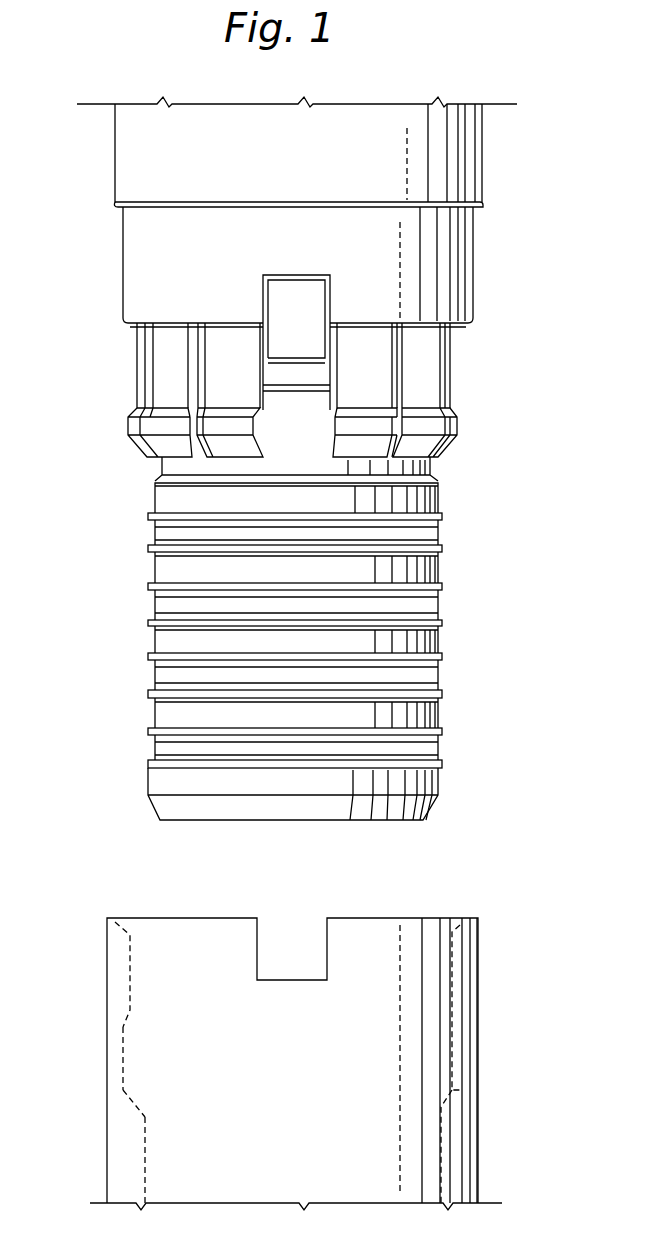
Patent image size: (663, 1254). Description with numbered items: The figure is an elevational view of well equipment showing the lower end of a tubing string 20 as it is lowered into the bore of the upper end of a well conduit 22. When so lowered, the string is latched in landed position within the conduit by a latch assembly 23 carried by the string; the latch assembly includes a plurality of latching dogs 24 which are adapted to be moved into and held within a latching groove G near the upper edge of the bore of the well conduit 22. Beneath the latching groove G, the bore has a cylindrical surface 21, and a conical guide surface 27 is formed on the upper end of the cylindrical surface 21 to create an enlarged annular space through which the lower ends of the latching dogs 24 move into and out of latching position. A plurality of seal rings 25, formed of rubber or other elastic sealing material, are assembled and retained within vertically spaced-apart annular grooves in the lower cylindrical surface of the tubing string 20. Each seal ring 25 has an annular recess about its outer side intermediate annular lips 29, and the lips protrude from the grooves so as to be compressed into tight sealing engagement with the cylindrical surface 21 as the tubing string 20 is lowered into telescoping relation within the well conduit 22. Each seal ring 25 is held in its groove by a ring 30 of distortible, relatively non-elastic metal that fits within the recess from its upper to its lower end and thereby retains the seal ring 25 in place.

The tubing string 20 is at (488, 190).
The cylindrical surface 21 is at (147, 1132).
The well conduit 22 is at (107, 1005).
The latch assembly 23 is at (129, 431).
The latching dogs 24 is at (458, 432).
The seal rings 25 is at (457, 527).
The conical guide surface 27 is at (140, 1108).
The annular lips 29 is at (450, 512).
The ring 30 is at (437, 678).
The latching groove G is at (123, 1060).